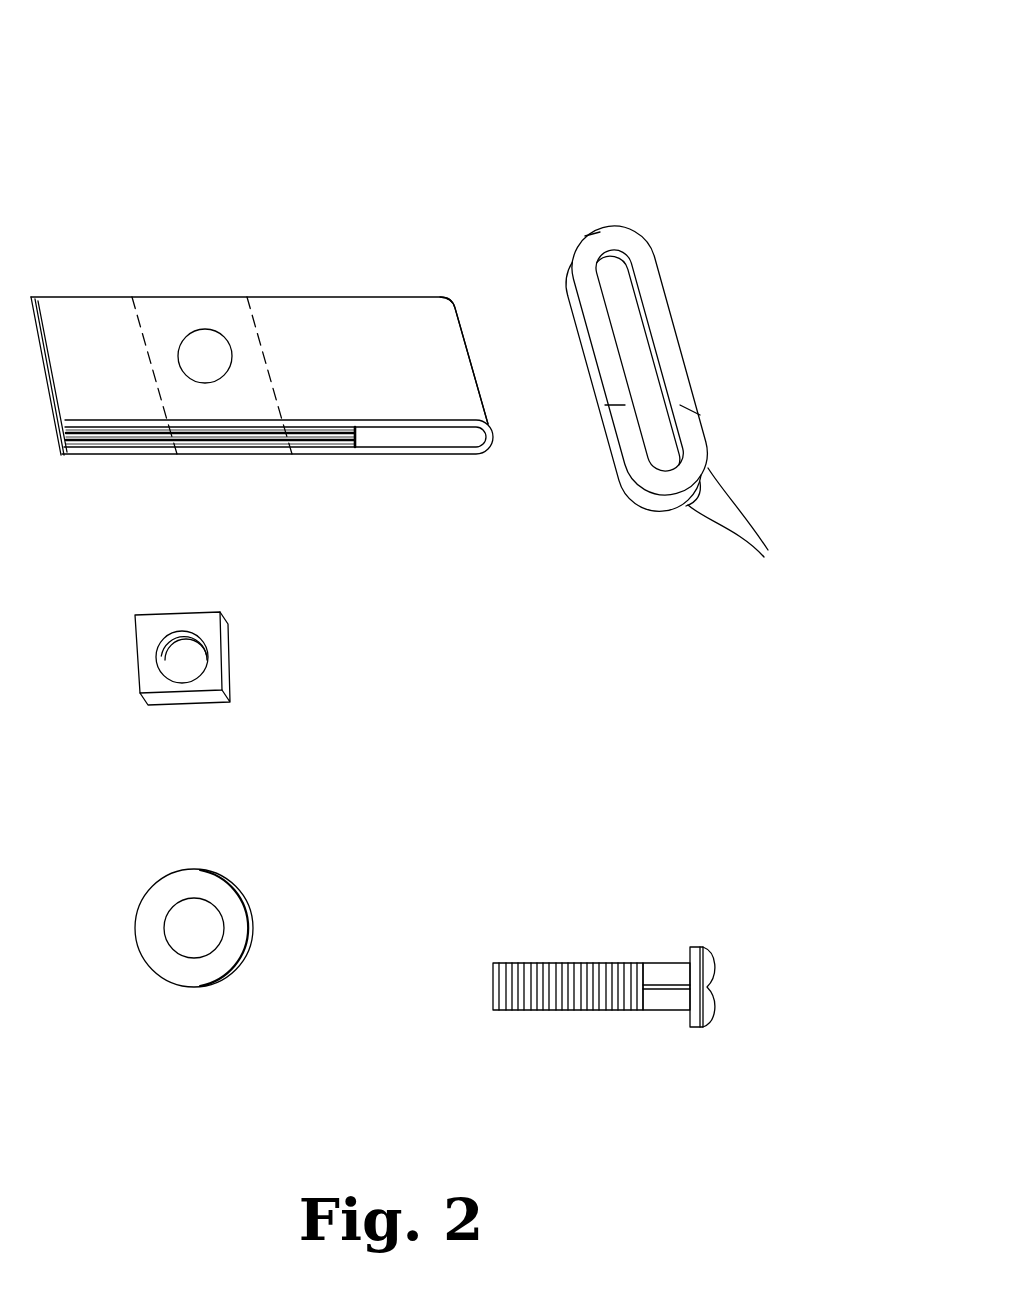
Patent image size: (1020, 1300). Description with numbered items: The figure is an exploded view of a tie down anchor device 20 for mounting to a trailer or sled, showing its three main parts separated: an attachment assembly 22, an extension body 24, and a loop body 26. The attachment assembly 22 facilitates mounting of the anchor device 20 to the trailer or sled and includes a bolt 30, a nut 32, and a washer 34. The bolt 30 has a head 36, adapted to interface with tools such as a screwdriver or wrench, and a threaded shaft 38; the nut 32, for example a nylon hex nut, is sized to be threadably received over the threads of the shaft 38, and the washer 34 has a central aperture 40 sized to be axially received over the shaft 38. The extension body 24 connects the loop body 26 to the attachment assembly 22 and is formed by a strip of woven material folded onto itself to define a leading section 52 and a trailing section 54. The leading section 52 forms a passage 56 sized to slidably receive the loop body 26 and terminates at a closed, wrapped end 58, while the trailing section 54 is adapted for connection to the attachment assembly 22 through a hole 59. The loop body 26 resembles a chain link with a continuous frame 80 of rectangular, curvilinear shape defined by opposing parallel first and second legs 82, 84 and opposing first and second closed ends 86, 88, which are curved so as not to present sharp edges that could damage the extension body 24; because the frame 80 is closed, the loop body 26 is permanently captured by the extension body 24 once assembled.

The tie down anchor device 20 is at (577, 38).
The attachment assembly 22 is at (431, 877).
The extension body 24 is at (276, 356).
The loop body 26 is at (672, 365).
The bolt 30 is at (630, 1029).
The nut 32 is at (233, 652).
The washer 34 is at (195, 900).
The head 36 is at (702, 1027).
The threaded shaft 38 is at (550, 1013).
The central aperture 40 is at (214, 938).
The leading section 52 is at (402, 313).
The trailing section 54 is at (92, 313).
The passage 56 is at (446, 435).
The wrapped end 58 is at (478, 384).
The hole 59 is at (192, 332).
The continuous frame 80 is at (675, 335).
The first leg 82 is at (618, 407).
The second leg 84 is at (691, 418).
The first closed end 86 is at (590, 240).
The second closed end 88 is at (766, 557).